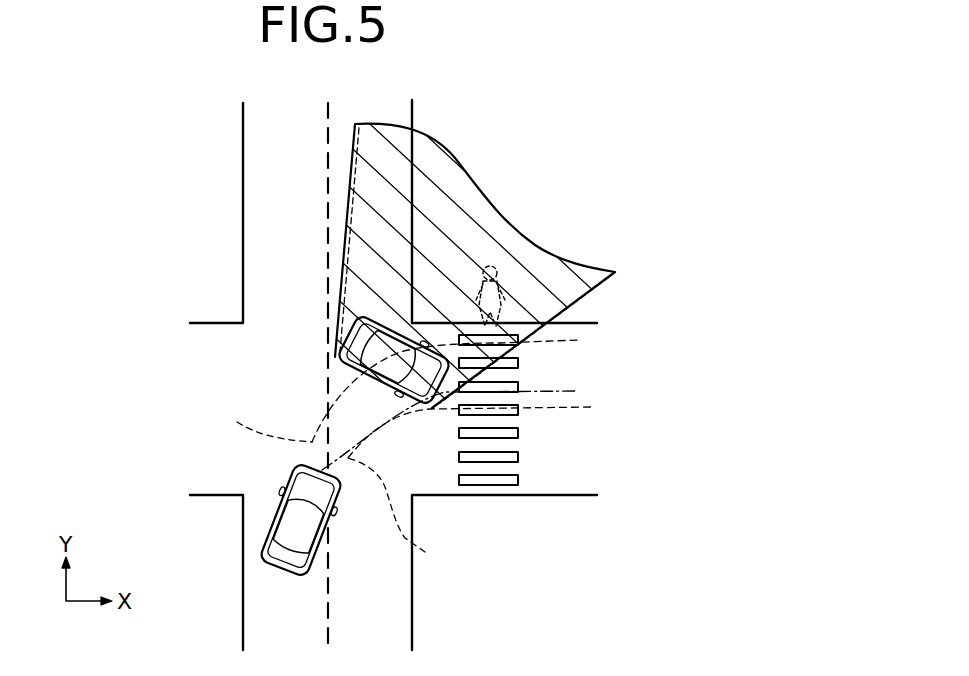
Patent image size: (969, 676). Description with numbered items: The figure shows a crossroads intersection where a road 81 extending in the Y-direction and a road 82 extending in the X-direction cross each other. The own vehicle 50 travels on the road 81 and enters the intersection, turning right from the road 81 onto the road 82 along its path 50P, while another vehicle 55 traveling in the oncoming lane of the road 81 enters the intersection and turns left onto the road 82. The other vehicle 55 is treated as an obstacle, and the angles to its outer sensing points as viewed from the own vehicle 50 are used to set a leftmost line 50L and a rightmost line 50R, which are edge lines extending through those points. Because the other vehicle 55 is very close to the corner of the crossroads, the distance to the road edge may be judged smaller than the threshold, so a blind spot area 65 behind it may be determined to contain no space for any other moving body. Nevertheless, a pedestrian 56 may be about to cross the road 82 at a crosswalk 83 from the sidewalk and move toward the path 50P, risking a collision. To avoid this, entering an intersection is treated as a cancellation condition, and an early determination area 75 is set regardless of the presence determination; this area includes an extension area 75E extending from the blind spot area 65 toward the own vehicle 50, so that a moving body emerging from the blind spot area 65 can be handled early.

The own vehicle 50 is at (266, 537).
The path of the own vehicle 50P is at (575, 391).
The leftmost line 50L is at (380, 391).
The rightmost line 50R is at (470, 489).
The other vehicle 55 is at (334, 364).
The pedestrian 56 is at (498, 268).
The blind spot area 65 is at (399, 137).
The early determination area 75 is at (350, 163).
The extension area 75E is at (328, 335).
The road 81 is at (250, 627).
The road 82 is at (574, 485).
The crosswalk 83 is at (511, 482).